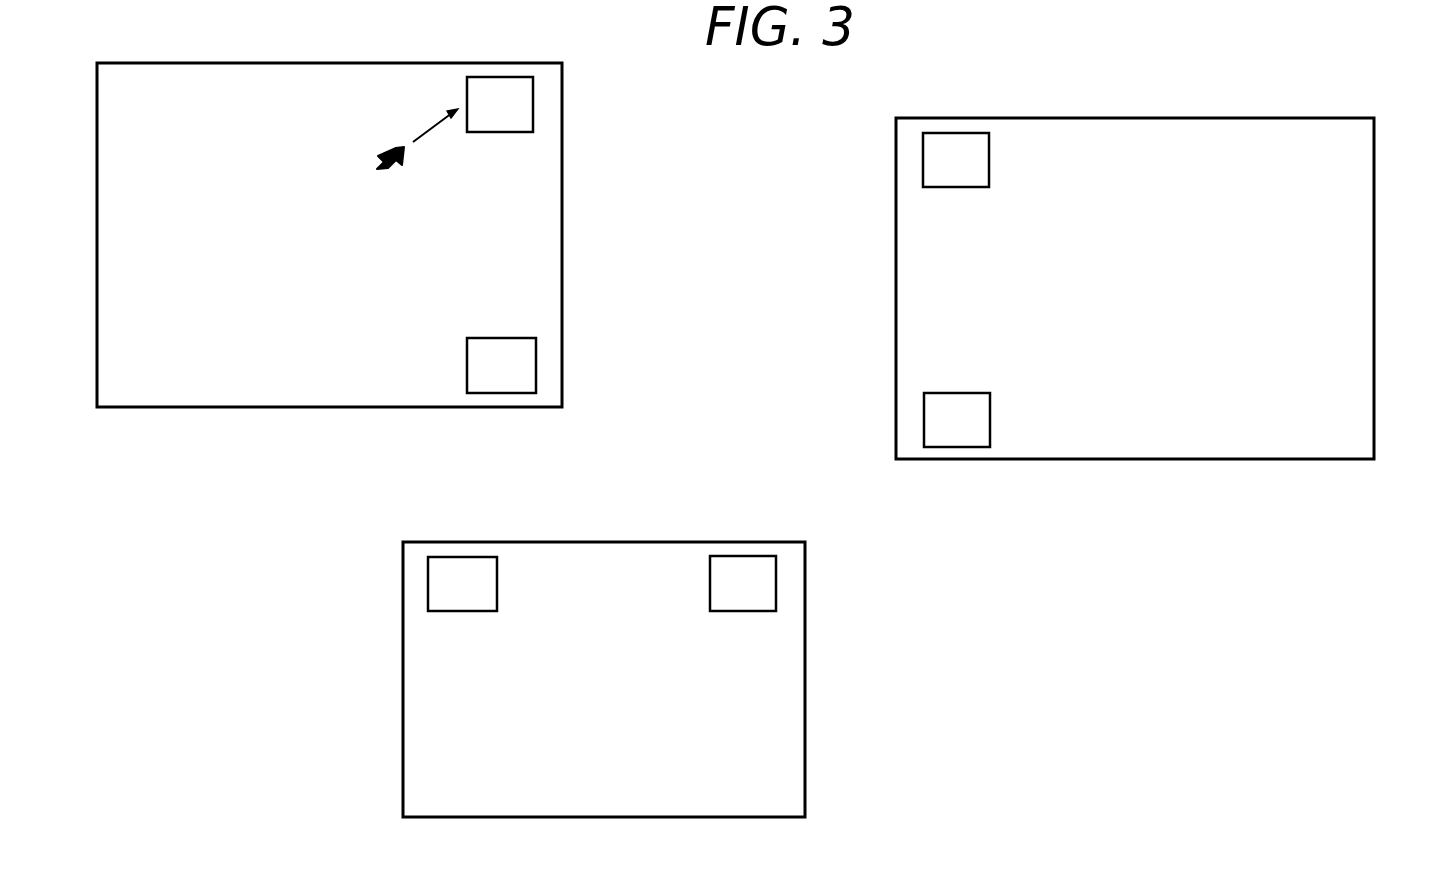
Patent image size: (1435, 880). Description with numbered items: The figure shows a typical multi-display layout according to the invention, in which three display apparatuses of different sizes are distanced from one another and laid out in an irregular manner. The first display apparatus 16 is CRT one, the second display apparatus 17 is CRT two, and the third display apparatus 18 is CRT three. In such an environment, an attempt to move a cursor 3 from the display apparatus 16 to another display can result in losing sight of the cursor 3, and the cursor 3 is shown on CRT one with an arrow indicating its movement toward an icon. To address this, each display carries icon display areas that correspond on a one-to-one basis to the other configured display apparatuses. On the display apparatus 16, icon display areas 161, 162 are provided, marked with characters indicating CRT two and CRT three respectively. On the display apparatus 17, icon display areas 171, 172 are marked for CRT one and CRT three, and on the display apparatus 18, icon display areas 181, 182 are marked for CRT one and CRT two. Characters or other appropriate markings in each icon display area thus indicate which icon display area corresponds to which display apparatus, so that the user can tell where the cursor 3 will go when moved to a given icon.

The display apparatus 16 is at (562, 68).
The icon display area 161 is at (533, 101).
The icon display area 162 is at (536, 361).
The cursor 3 is at (383, 173).
The display apparatus 17 is at (1376, 140).
The icon display area 171 is at (923, 155).
The icon display area 172 is at (924, 420).
The display apparatus 18 is at (805, 552).
The icon display area 181 is at (428, 588).
The icon display area 182 is at (776, 584).